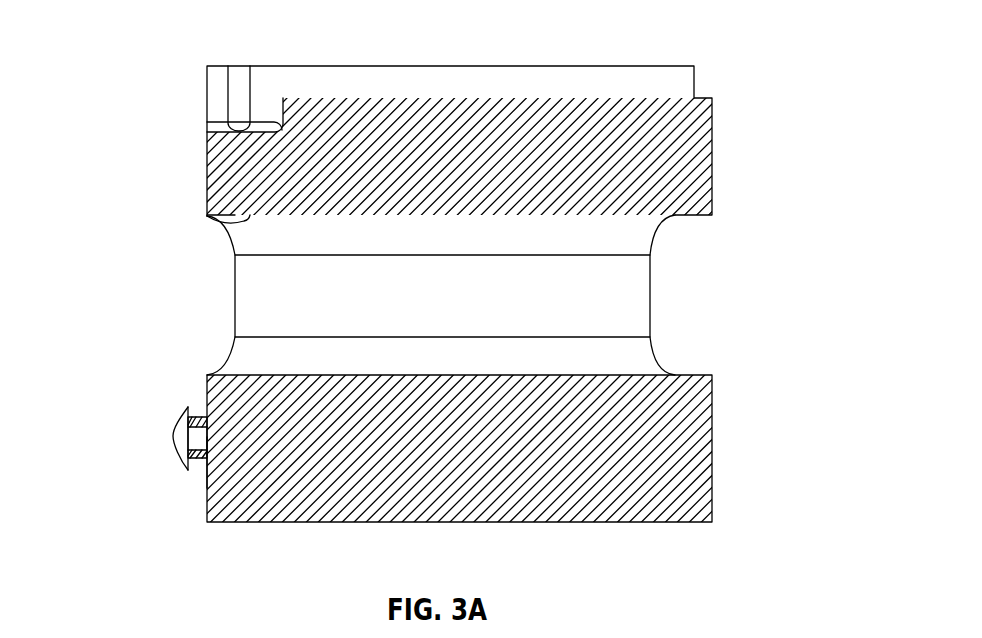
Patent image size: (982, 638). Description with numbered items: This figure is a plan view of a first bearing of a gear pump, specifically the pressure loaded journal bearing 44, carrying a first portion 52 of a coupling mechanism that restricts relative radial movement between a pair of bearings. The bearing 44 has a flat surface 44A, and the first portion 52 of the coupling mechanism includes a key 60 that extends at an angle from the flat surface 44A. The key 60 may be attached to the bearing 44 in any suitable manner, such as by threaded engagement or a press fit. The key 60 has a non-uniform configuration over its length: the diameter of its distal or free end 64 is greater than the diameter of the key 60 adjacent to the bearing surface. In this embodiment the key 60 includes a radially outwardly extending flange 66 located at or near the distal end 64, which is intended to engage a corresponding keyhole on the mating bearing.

The bearing 44 is at (699, 32).
The flat surface 44A is at (206, 487).
The first portion 52 is at (120, 439).
The distal end 64 is at (181, 428).
The radially outwardly extending flange 66 is at (178, 451).
The key 60 is at (208, 437).